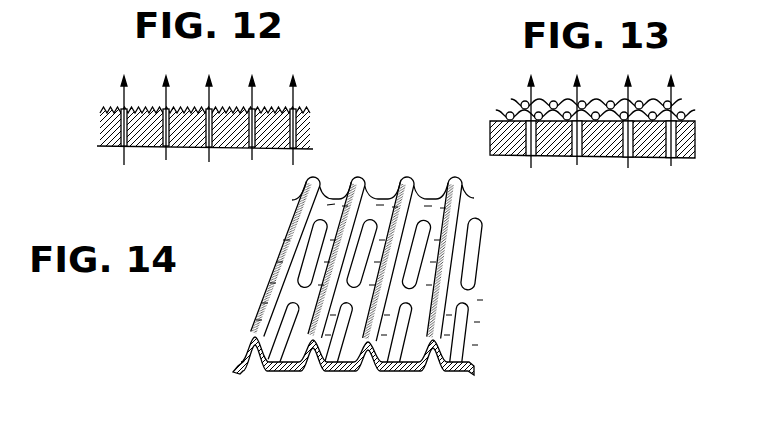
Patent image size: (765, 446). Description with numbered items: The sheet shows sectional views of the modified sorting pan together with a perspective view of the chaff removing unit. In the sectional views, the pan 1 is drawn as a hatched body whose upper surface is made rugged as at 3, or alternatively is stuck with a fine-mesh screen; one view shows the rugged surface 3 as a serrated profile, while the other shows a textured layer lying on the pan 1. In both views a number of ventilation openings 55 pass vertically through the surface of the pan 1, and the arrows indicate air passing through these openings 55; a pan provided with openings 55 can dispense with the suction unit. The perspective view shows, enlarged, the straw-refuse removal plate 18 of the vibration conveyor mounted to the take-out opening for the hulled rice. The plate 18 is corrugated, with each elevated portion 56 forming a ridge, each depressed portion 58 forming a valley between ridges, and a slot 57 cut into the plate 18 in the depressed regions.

In FIG. 12, the pan 1 is at (229, 150).
In FIG. 13, the pan 1 is at (557, 151).
In FIG. 12, the rugged surface 3 is at (214, 108).
In FIG. 13, the rugged surface 3 is at (546, 102).
In FIG. 14, the straw-refuse removal plate 18 is at (421, 199).
In FIG. 12, the ventilation openings 55 is at (131, 148).
In FIG. 13, the ventilation openings 55 is at (527, 157).
In FIG. 14, the elevated portion 56 is at (462, 342).
In FIG. 14, the slot 57 is at (288, 370).
In FIG. 14, the depressed portion 58 is at (408, 372).